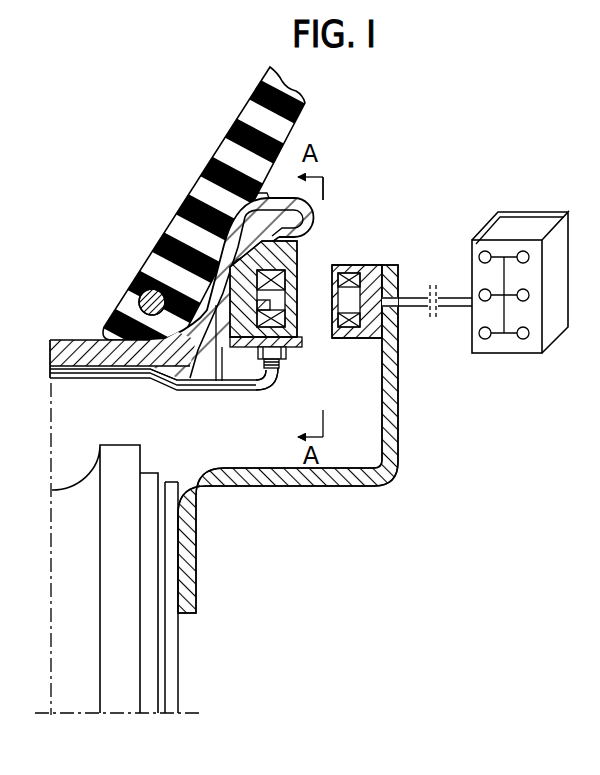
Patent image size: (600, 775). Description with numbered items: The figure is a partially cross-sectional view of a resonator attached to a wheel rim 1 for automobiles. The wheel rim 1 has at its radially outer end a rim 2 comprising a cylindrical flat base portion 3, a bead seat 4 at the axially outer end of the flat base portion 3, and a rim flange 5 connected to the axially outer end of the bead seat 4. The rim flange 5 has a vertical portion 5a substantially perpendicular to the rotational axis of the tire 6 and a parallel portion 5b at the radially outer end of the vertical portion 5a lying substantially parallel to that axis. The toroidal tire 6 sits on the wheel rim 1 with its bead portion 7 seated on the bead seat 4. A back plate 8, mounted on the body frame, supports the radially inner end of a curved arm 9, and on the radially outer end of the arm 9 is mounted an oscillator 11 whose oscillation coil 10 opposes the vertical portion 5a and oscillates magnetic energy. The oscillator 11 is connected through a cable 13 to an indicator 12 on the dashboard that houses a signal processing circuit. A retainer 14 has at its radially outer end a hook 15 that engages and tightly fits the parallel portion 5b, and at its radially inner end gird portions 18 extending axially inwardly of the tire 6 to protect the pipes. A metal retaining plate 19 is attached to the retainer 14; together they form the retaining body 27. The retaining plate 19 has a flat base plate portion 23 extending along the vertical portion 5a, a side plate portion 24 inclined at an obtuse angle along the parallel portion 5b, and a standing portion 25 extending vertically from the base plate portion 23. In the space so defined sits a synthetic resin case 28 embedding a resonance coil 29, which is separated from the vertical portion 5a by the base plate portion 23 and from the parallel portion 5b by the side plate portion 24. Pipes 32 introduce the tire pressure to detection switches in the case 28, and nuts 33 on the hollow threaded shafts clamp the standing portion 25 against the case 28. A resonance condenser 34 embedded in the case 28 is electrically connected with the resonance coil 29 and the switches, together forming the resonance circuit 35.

The wheel rim 1 is at (79, 329).
The rim 2 is at (56, 334).
The cylindrical flat base portion 3 is at (52, 363).
The bead seats 4 is at (137, 367).
The rim flange 5 is at (222, 228).
The vertical portion 5a is at (198, 280).
The parallel portion 5b is at (267, 210).
The tire 6 is at (197, 144).
The bead portions 7 is at (115, 297).
The back plate 8 is at (180, 637).
The curved arm 9 is at (335, 487).
The oscillation coil 10 is at (348, 273).
The oscillator 11 is at (390, 254).
The indicator 12 is at (533, 220).
The cable 13 is at (450, 312).
The retainer 14 is at (337, 193).
The hook 15 is at (309, 220).
The gird portions 18 is at (255, 378).
The retaining plate 19 is at (232, 352).
The flat base plate portion 23 is at (200, 372).
The side plate portion 24 is at (265, 257).
The standing portion 25 is at (287, 353).
The retaining body 27 is at (363, 205).
The case 28 is at (216, 382).
The resonance coil 29 is at (284, 280).
The pipes 32 is at (63, 374).
The nuts 33 is at (281, 362).
The resonance condenser 34 is at (284, 308).
The resonance circuit 35 is at (322, 345).